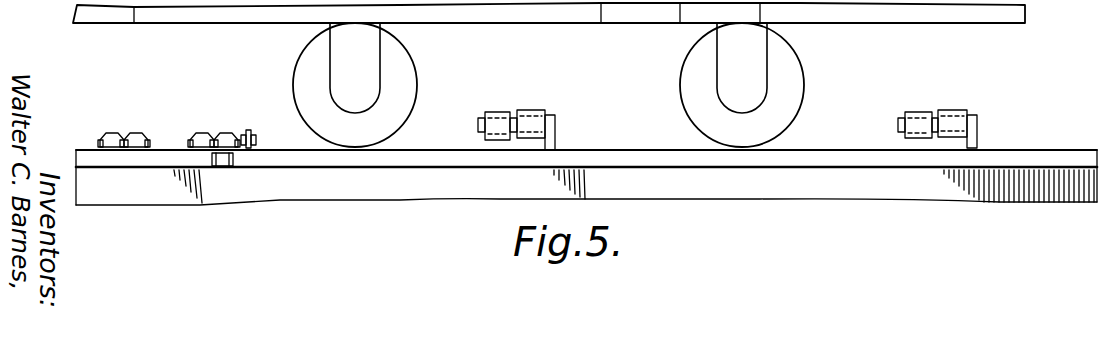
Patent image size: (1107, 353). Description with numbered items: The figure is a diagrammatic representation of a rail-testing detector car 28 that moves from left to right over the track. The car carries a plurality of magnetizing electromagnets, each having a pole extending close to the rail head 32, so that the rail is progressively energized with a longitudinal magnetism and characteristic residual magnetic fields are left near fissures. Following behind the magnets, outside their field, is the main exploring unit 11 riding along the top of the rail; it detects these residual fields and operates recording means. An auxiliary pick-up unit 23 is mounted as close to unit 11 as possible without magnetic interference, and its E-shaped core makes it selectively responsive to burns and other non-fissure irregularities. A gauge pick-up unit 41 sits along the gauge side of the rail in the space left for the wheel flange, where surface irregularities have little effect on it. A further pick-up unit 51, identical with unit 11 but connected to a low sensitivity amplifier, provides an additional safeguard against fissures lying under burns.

The detector car 28 is at (880, 23).
The rail head 32 is at (823, 152).
The pick-up unit 51 is at (123, 131).
The exploring unit 11 is at (215, 131).
The auxiliary pick-up unit 23 is at (250, 129).
The gauge pick-up unit 41 is at (238, 160).